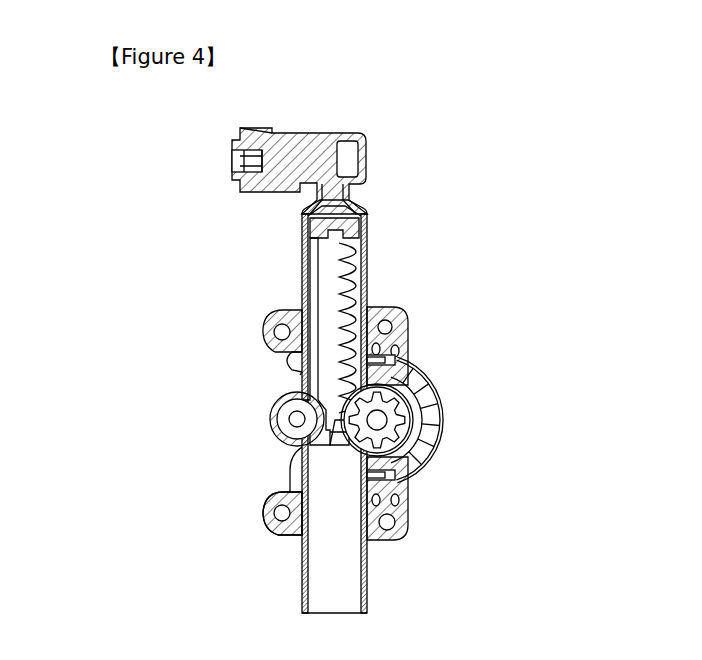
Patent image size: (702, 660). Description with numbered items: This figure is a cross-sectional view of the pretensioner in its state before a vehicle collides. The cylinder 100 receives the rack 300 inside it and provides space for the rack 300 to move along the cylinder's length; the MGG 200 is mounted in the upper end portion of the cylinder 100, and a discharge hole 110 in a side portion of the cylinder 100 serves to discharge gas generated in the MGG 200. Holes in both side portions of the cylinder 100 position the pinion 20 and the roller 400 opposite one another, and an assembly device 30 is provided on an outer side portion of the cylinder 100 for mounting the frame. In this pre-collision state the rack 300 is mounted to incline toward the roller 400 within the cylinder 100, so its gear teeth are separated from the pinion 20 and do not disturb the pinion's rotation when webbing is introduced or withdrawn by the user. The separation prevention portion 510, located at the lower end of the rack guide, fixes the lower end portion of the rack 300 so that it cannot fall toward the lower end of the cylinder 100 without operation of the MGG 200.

The MGG 200 is at (366, 150).
The cylinder 100 is at (367, 256).
The rack 300 is at (330, 262).
The assembly device 30 is at (270, 343).
The discharge hole 110 is at (300, 374).
The roller 400 is at (276, 428).
The pinion 20 is at (418, 400).
The separation prevention portion 510 is at (405, 450).